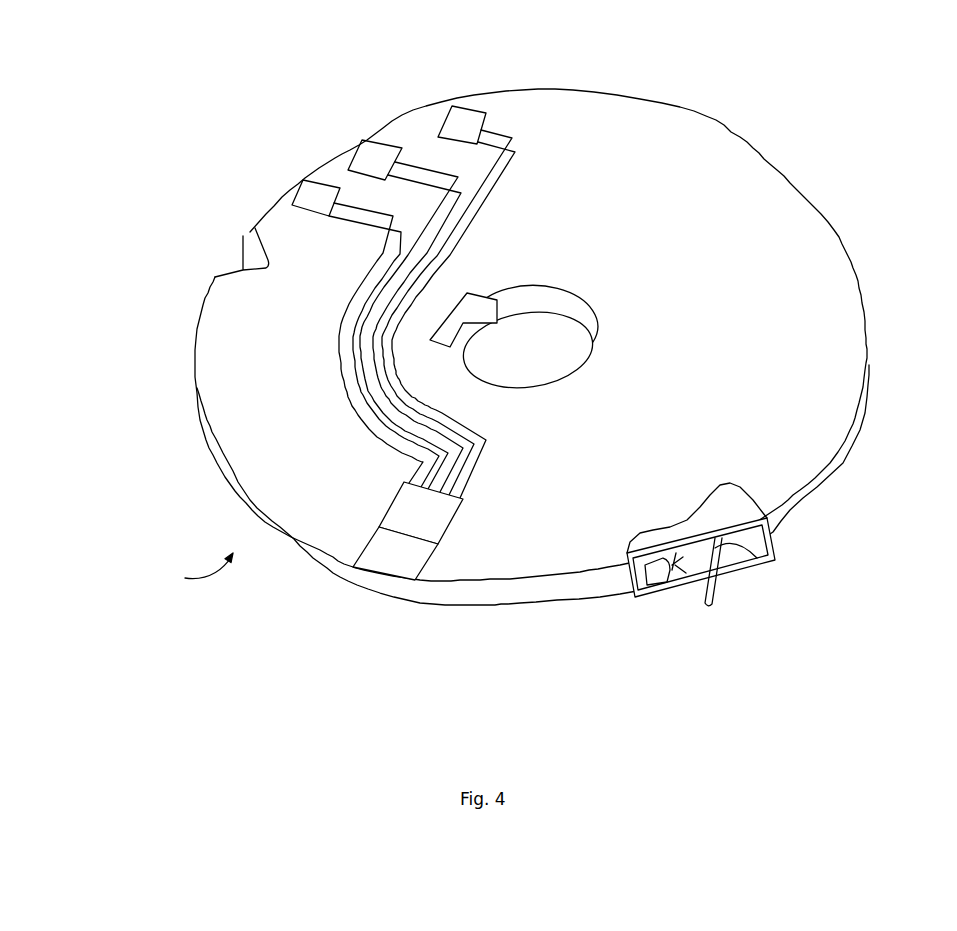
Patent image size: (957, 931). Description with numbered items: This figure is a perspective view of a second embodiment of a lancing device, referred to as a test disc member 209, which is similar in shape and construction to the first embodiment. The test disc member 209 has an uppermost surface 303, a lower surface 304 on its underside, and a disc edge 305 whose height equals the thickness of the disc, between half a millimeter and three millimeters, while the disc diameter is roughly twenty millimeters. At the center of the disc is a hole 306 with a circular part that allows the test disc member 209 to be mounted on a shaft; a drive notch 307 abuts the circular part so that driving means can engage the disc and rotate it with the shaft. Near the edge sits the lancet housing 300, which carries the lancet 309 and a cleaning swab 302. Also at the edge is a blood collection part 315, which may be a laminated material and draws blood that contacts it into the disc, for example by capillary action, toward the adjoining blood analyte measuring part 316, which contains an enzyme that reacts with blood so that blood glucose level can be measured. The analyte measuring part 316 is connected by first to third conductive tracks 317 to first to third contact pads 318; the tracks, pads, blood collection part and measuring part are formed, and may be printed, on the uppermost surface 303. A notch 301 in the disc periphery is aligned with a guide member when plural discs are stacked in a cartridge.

The test disc member 209 is at (845, 86).
The lancet housing 300 is at (722, 505).
The notch 301 is at (233, 263).
The cleaning swab 302 is at (655, 575).
The uppermost surface 303 is at (262, 457).
The lower surface 304 is at (191, 570).
The disc edge 305 is at (300, 547).
The hole 306 is at (527, 340).
The drive notch 307 is at (477, 307).
The lancet 309 is at (713, 583).
The blood collection part 315 is at (378, 563).
The blood analyte measuring part 316 is at (423, 517).
The conductive tracks 317 is at (360, 400).
The contact pads 318 is at (457, 123).